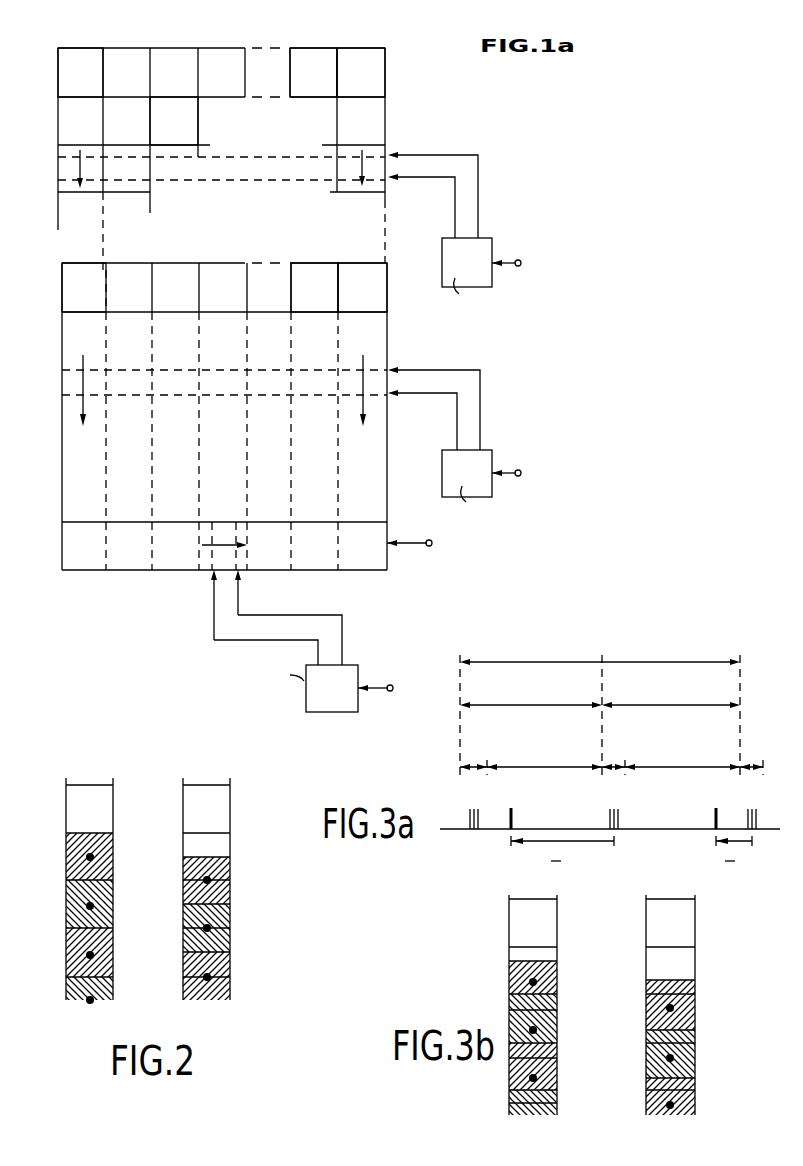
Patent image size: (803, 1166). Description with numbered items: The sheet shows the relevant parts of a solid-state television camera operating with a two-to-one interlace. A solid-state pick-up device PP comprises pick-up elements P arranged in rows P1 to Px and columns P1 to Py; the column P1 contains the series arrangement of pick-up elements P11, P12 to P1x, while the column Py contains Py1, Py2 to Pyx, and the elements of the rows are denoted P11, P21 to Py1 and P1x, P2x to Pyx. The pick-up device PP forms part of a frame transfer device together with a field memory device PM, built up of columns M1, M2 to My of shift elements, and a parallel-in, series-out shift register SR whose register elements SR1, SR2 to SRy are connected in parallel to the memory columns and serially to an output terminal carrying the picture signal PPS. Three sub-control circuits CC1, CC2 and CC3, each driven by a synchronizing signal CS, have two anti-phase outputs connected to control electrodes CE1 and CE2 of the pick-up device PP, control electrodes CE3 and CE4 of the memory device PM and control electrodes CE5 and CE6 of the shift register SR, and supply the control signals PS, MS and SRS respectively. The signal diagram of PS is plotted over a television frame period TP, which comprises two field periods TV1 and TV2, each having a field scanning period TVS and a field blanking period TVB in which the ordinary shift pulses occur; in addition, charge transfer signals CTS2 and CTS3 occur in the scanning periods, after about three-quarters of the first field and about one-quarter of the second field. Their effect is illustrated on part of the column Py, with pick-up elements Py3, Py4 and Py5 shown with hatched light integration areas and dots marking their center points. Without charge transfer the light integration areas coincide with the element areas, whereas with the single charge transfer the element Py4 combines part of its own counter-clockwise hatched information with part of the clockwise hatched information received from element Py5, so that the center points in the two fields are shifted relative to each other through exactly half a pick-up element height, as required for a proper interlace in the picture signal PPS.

In FIG. 1A, the solid-state pick-up device PP is at (385, 197).
In FIG. 1A, the field memory device PM is at (387, 427).
In FIG. 1A, the control electrode CE1 is at (66, 154).
In FIG. 1A, the control electrode CE2 is at (62, 194).
In FIG. 1A, the control electrode CE3 is at (68, 370).
In FIG. 1A, the control electrode CE4 is at (64, 400).
In FIG. 1A, the control electrode CE5 is at (206, 564).
In FIG. 1A, the control electrode CE6 is at (240, 563).
In FIG. 1A, the pick-up element column Py is at (131, 30).
In FIG. 2, the pick-up element column Py is at (88, 779).
In FIG. 3B, the pick-up element column Py is at (531, 897).
In FIG. 1A, the pick-up element column P1 is at (312, 27).
In FIG. 1A, the pick-up element row Px is at (40, 108).
In FIG. 1A, the pick-up element Pyx is at (80, 72).
In FIG. 1A, the pick-up element P2x is at (313, 72).
In FIG. 1A, the pick-up element P1x is at (361, 72).
In FIG. 1A, the pick-up element P is at (180, 136).
In FIG. 1A, the pick-up element Py2 is at (44, 265).
In FIG. 1A, the pick-up element P12 is at (361, 251).
In FIG. 1A, the pick-up element Py1 is at (84, 287).
In FIG. 1A, the pick-up element P21 is at (314, 287).
In FIG. 1A, the pick-up element P11 is at (362, 287).
In FIG. 1A, the memory column My is at (77, 491).
In FIG. 1A, the memory column M2 is at (312, 491).
In FIG. 1A, the memory column M1 is at (360, 491).
In FIG. 1A, the shift register SR is at (88, 572).
In FIG. 1A, the register element SRy is at (83, 545).
In FIG. 1A, the register element SR2 is at (321, 545).
In FIG. 1A, the register element SR1 is at (364, 545).
In FIG. 1A, the control signal PS is at (478, 168).
In FIG. 3A, the control signal PS is at (604, 811).
In FIG. 1A, the control signal MS is at (480, 385).
In FIG. 1A, the control signal SRS is at (333, 614).
In FIG. 1A, the sub-control circuit CC1 is at (490, 238).
In FIG. 1A, the sub-control circuit CC2 is at (490, 450).
In FIG. 1A, the sub-control circuit CC3 is at (352, 664).
In FIG. 1A, the synchronizing signal CS is at (390, 684).
In FIG. 1A, the picture signal PPS is at (428, 540).
In FIG. 2, the field period TV1 is at (89, 903).
In FIG. 3A, the field period TV1 is at (531, 695).
In FIG. 3B, the field period TV1 is at (533, 1020).
In FIG. 2, the field period TV2 is at (206, 903).
In FIG. 3A, the field period TV2 is at (671, 695).
In FIG. 3B, the field period TV2 is at (670, 1020).
In FIG. 3A, the television frame period TP is at (600, 709).
In FIG. 3A, the field blanking period TVB is at (475, 759).
In FIG. 3A, the field scanning period TVS is at (613, 757).
In FIG. 3A, the charge transfer signal CTS2 is at (514, 820).
In FIG. 3A, the charge transfer signal CTS3 is at (714, 820).
In FIG. 2, the pick-up element Py5 is at (113, 855).
In FIG. 3B, the pick-up element Py5 is at (557, 975).
In FIG. 2, the pick-up element Py4 is at (113, 903).
In FIG. 3B, the pick-up element Py4 is at (557, 1020).
In FIG. 2, the pick-up element Py3 is at (113, 952).
In FIG. 3B, the pick-up element Py3 is at (557, 1065).